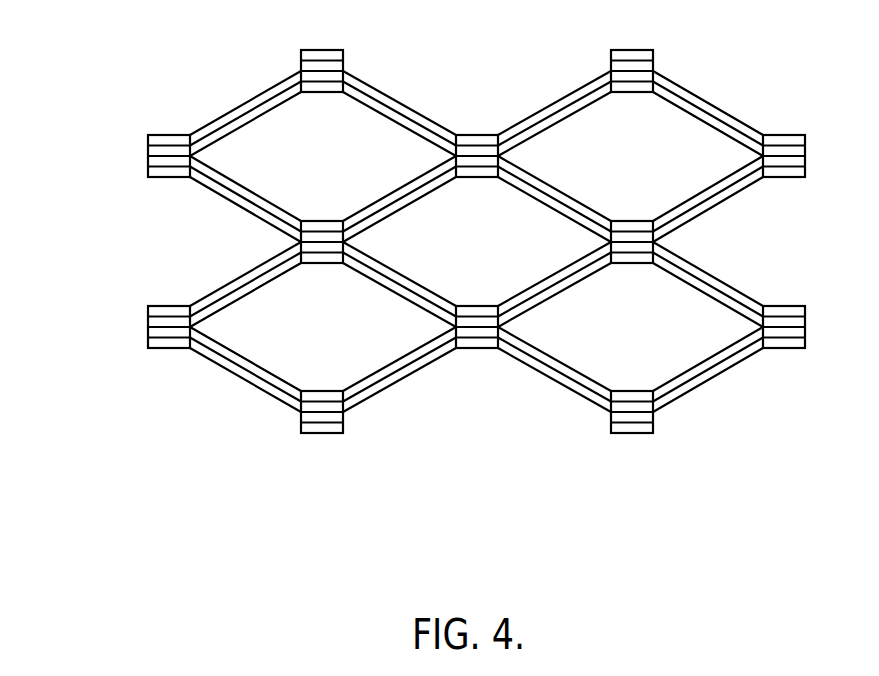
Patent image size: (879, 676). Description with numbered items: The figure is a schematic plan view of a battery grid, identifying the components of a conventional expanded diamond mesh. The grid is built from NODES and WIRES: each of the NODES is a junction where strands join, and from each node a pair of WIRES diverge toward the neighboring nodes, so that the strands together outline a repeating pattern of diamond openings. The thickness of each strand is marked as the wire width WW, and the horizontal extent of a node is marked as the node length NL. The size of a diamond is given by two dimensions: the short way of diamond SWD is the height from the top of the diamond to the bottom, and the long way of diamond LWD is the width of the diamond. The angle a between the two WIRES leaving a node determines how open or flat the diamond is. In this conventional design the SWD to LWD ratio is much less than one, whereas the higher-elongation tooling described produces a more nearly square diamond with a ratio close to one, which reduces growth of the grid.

The nodes NODES is at (331, 101).
The wires WIRES is at (671, 279).
The wire width WW is at (737, 72).
The node length NL is at (498, 135).
The short way of diamond SWD is at (300, 245).
The long way of diamond LWD is at (633, 433).
The angle between wires a is at (239, 300).